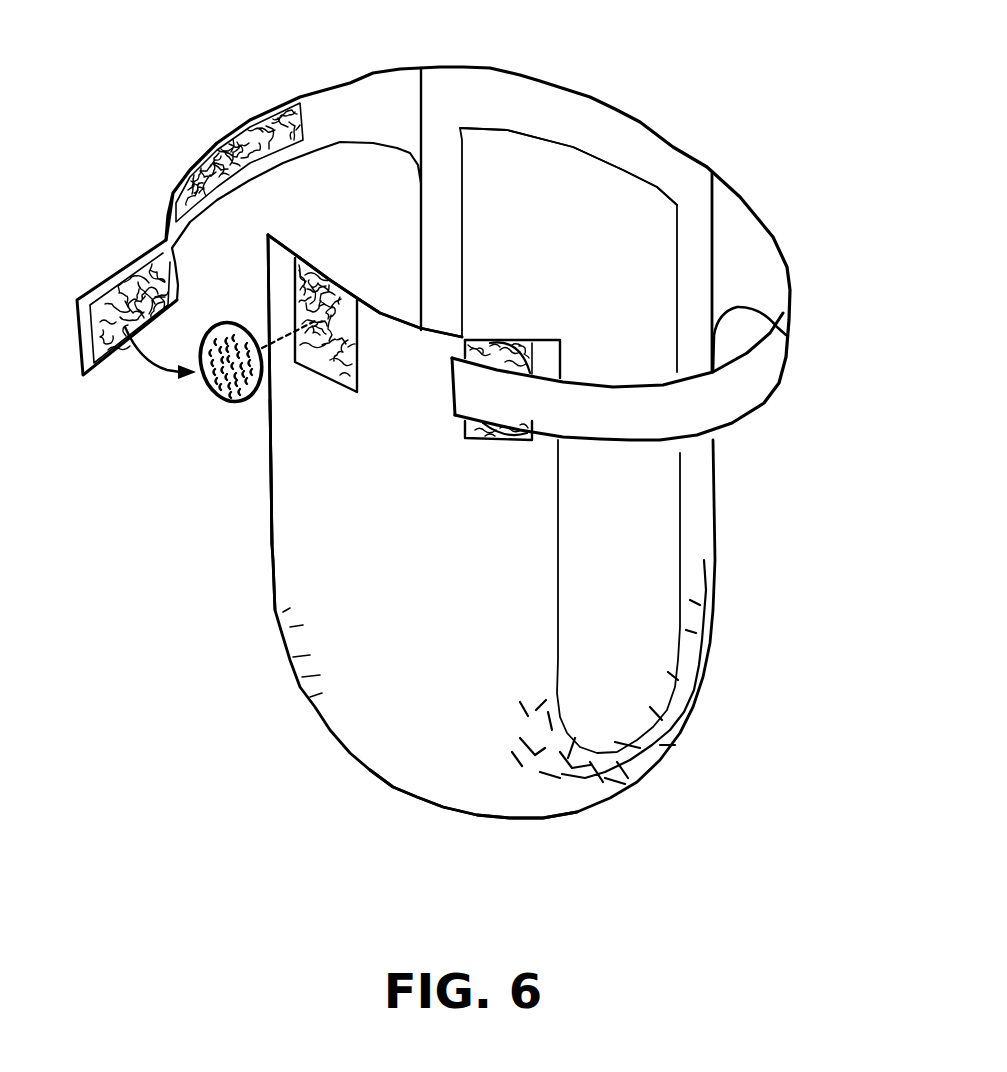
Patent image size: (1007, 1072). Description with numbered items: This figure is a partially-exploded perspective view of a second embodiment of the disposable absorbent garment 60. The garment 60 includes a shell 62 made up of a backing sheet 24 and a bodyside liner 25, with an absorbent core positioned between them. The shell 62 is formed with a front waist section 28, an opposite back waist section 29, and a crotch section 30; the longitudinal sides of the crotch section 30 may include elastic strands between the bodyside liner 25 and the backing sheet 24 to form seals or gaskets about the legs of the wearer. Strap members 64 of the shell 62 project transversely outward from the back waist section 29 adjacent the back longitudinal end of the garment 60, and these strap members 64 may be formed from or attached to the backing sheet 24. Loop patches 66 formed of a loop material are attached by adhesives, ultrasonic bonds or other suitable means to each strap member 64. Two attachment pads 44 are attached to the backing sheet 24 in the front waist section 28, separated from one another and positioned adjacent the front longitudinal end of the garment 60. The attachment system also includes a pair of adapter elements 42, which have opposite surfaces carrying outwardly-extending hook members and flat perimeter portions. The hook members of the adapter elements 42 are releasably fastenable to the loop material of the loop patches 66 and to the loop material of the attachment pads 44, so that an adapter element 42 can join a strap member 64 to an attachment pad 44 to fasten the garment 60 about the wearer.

The backing sheet 24 is at (403, 97).
The bodyside liner 25 is at (700, 203).
The front waist section 28 is at (388, 300).
The back waist section 29 is at (615, 100).
The crotch section 30 is at (462, 785).
The adapter element 42 is at (485, 343).
The attachment pad 44 is at (513, 340).
The disposable absorbent garment 60 is at (262, 795).
The shell 62 is at (280, 553).
The strap member 64 is at (207, 133).
The loop patch 66 is at (135, 290).